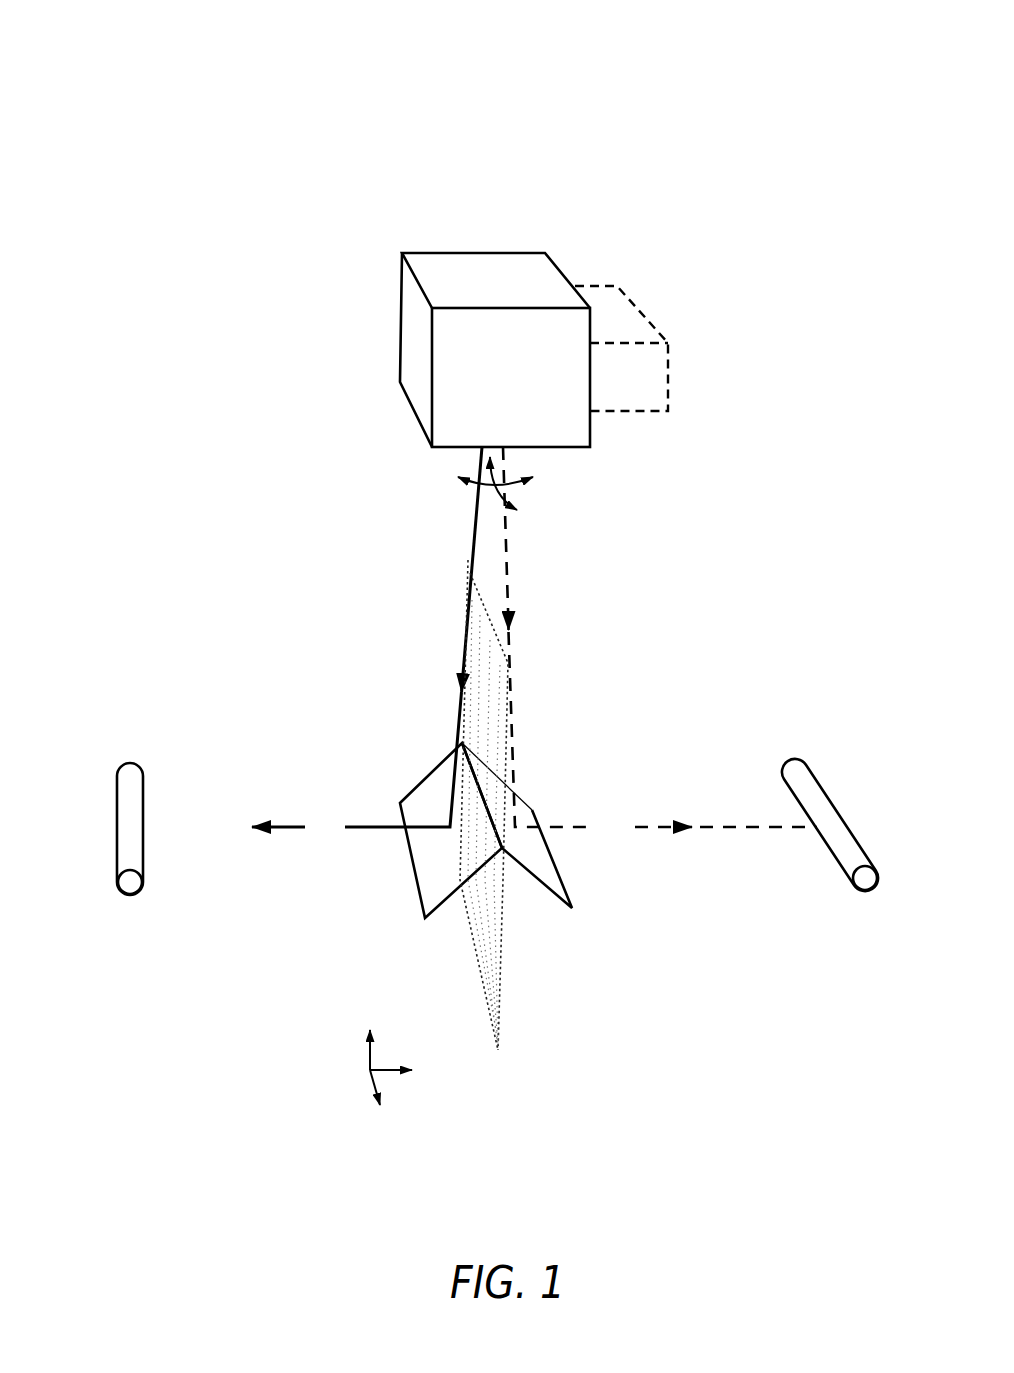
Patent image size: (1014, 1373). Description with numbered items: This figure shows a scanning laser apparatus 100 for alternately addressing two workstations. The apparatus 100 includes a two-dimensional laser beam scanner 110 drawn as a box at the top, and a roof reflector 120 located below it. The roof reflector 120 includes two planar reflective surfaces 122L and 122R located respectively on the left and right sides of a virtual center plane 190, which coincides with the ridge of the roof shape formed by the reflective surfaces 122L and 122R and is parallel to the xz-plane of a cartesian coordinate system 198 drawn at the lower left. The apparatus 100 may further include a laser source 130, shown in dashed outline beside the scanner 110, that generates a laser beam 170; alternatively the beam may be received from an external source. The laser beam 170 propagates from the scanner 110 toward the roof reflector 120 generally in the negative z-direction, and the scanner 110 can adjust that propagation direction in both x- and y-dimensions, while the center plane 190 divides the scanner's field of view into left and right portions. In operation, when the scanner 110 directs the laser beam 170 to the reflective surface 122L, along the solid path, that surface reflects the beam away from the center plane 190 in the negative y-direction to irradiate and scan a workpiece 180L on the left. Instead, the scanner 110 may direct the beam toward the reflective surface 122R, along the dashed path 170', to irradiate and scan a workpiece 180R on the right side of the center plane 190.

The scanning laser apparatus 100 is at (138, 62).
The 2D laser beam scanner 110 is at (400, 270).
The laser source 130 is at (668, 390).
The laser beam 170 is at (392, 645).
The dashed propagation path of laser beam 170' is at (653, 644).
The roof reflector 120 is at (412, 755).
The left reflective surface 122L is at (422, 890).
The right reflective surface 122R is at (570, 903).
The virtual center plane 190 is at (500, 1005).
The left workpiece 180L is at (130, 895).
The right workpiece 180R is at (866, 890).
The cartesian coordinate system 198 is at (335, 1085).